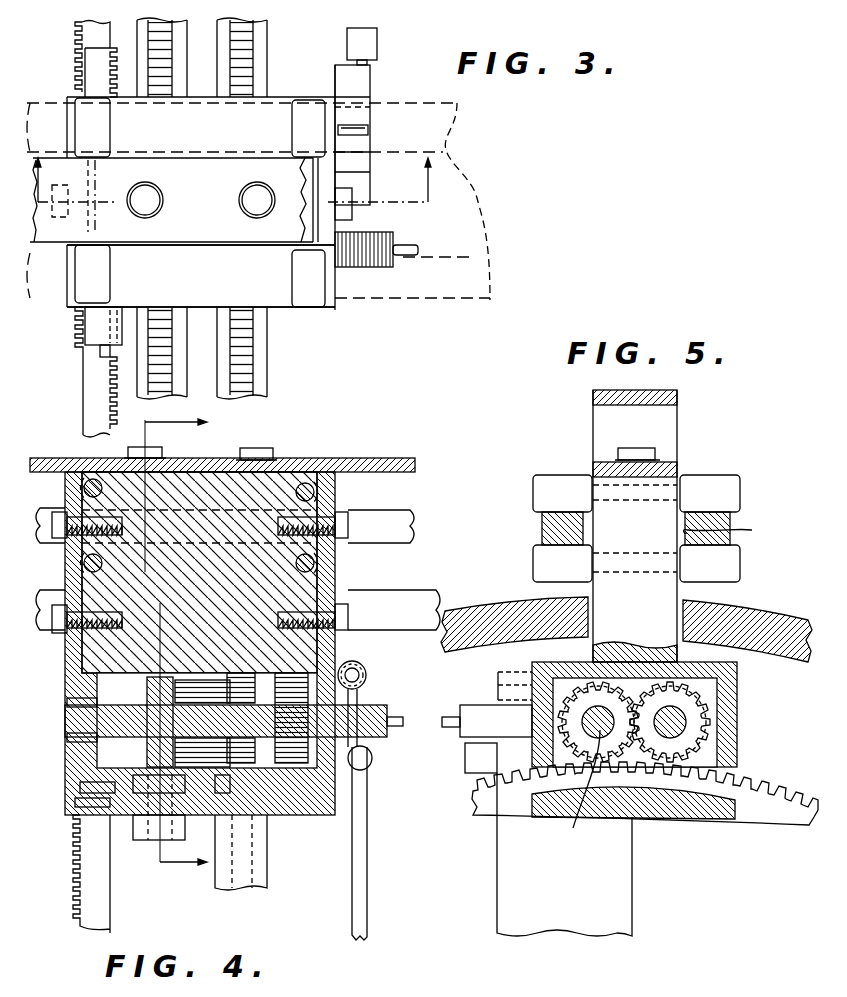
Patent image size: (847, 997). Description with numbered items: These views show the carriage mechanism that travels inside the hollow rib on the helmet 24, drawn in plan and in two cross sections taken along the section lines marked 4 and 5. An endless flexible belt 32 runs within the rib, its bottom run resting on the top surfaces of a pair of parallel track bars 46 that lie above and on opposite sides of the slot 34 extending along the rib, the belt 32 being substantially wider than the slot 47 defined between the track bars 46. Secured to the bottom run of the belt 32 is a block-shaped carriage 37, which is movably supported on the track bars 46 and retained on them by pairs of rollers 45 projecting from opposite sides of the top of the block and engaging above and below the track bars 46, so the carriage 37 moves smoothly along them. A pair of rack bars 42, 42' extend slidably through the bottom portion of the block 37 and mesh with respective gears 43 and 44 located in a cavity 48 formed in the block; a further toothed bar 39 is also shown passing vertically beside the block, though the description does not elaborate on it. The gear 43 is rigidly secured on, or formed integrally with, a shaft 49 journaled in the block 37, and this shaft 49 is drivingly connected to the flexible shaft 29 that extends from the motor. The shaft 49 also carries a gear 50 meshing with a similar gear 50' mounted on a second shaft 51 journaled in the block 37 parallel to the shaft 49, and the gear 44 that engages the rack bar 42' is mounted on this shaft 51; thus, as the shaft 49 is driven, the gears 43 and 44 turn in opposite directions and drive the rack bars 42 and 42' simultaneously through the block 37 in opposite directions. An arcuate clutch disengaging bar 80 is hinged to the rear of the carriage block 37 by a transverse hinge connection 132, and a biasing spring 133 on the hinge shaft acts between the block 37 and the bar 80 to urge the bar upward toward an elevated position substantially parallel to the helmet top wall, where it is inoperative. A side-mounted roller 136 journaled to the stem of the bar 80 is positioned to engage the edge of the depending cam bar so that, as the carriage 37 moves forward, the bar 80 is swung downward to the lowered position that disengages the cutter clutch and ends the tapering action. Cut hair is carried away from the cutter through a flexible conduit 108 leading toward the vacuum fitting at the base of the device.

In FIG. 3, the section line 4- 4 is at (240, 180).
In FIG. 4, the section line 5- 5 is at (176, 653).
In FIG. 5, the helmet 24 is at (790, 645).
In FIG. 4, the flexible shaft 29 is at (402, 728).
In FIG. 3, the endless flexible belt 32 is at (211, 172).
In FIG. 4, the endless flexible belt 32 is at (378, 467).
In FIG. 5, the endless flexible belt 32 is at (672, 463).
In FIG. 5, the slot 34 is at (590, 604).
In FIG. 3, the carriage 37 is at (322, 317).
In FIG. 4, the carriage 37 is at (420, 509).
In FIG. 5, the carriage 37 is at (662, 546).
In FIG. 3, the rack 39 is at (90, 373).
In FIG. 4, the rack 39 is at (110, 912).
In FIG. 3, the rack bar 42 is at (202, 220).
In FIG. 4, the rack bar 42 is at (171, 818).
In FIG. 5, the rack bar 42 is at (645, 818).
In FIG. 4, the rack bar 42' is at (263, 852).
In FIG. 4, the gear 43 is at (172, 695).
In FIG. 5, the gear 43 is at (710, 743).
In FIG. 4, the gear 44 is at (228, 746).
In FIG. 5, the gear 44 is at (575, 687).
In FIG. 3, the rollers 45 is at (110, 283).
In FIG. 5, the rollers 45 is at (727, 580).
In FIG. 3, the track bars 46 is at (479, 202).
In FIG. 4, the track bars 46 is at (383, 533).
In FIG. 5, the track bars 46 is at (732, 520).
In FIG. 5, the slot 47 is at (731, 530).
In FIG. 4, the cavity 48 is at (93, 683).
In FIG. 5, the cavity 48 is at (713, 690).
In FIG. 4, the shaft 49 is at (75, 718).
In FIG. 5, the shaft 49 is at (685, 722).
In FIG. 4, the gear 50 is at (347, 653).
In FIG. 4, the gear 50' is at (253, 654).
In FIG. 5, the second shaft 51 is at (579, 790).
In FIG. 4, the clutch disengaging bar 80 is at (372, 825).
In FIG. 5, the clutch disengaging bar 80 is at (622, 870).
In FIG. 3, the flexible conduit 108 is at (97, 328).
In FIG. 5, the flexible conduit 108 is at (478, 705).
In FIG. 4, the hinge connection 132 is at (369, 675).
In FIG. 4, the biasing spring 133 is at (377, 692).
In FIG. 3, the roller 136 is at (377, 45).
In FIG. 4, the roller 136 is at (372, 764).
In FIG. 5, the roller 136 is at (470, 772).